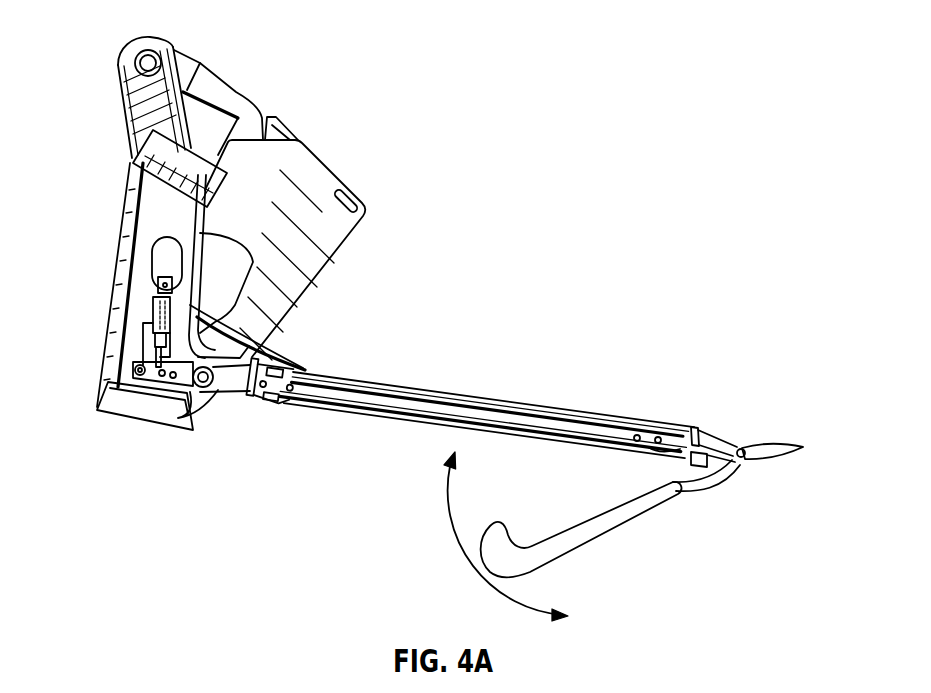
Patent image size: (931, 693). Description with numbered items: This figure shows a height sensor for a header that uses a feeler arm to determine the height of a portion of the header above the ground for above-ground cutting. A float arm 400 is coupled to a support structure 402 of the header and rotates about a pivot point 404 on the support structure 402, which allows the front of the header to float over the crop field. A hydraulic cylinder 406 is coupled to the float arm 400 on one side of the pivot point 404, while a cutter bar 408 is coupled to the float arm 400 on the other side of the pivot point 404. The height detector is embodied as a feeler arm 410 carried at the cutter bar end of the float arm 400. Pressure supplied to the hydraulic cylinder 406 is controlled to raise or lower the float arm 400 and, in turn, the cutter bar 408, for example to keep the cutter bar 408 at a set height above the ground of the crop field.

The float arm 400 is at (588, 412).
The support structure 402 is at (127, 223).
The pivot point 404 is at (187, 396).
The hydraulic cylinder 406 is at (153, 317).
The cutter bar 408 is at (788, 446).
The feeler arm 410 is at (598, 541).